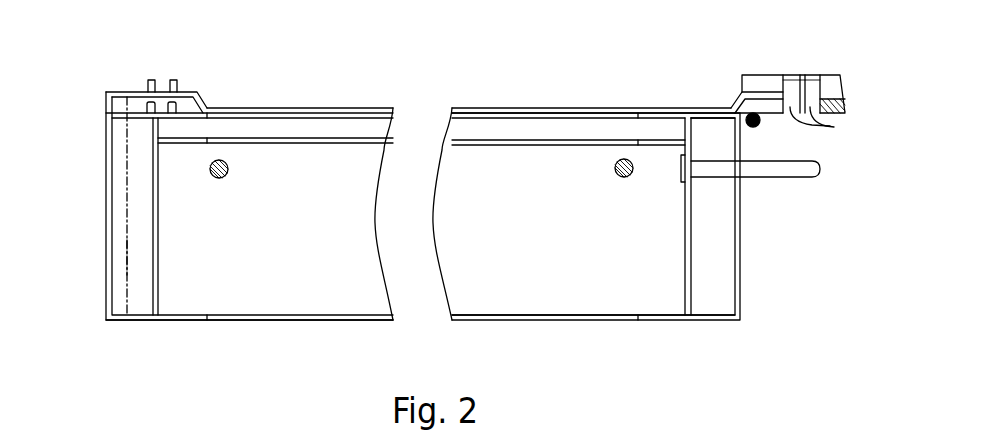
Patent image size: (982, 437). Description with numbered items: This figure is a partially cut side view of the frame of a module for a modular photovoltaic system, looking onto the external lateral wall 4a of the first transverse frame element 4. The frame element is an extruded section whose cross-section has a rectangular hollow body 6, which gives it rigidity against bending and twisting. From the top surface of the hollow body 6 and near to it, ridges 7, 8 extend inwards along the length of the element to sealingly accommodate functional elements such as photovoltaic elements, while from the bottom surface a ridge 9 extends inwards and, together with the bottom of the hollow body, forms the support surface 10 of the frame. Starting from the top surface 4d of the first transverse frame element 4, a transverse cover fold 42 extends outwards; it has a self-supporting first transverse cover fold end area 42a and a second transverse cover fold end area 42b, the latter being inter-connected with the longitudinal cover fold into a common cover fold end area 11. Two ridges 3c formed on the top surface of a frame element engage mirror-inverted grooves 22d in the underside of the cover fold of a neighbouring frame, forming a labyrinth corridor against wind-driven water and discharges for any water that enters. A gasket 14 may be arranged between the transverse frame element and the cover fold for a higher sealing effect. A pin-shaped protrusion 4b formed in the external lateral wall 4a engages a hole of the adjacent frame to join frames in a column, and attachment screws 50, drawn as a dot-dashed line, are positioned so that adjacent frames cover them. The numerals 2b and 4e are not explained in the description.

The terminal 2b is at (773, 172).
The ridges 3c is at (173, 80).
The first transverse frame element 4 is at (107, 155).
The external lateral wall 4a is at (322, 265).
The protrusion 4b is at (216, 178).
The top surface 4d is at (694, 103).
The bottom wall 4e is at (170, 336).
The hollow body 6 is at (127, 217).
The ridge 7 is at (647, 110).
The ridge 8 is at (662, 144).
The ridge 9 is at (667, 313).
The support surface 10 is at (296, 337).
The common cover fold end area 11 is at (757, 83).
The gasket 14 is at (758, 126).
The grooves 22d is at (838, 128).
The transverse cover fold 42 is at (250, 108).
The first transverse cover fold end area 42a is at (130, 92).
The second transverse cover fold end area 42b is at (739, 91).
The attachment screws 50 is at (127, 257).